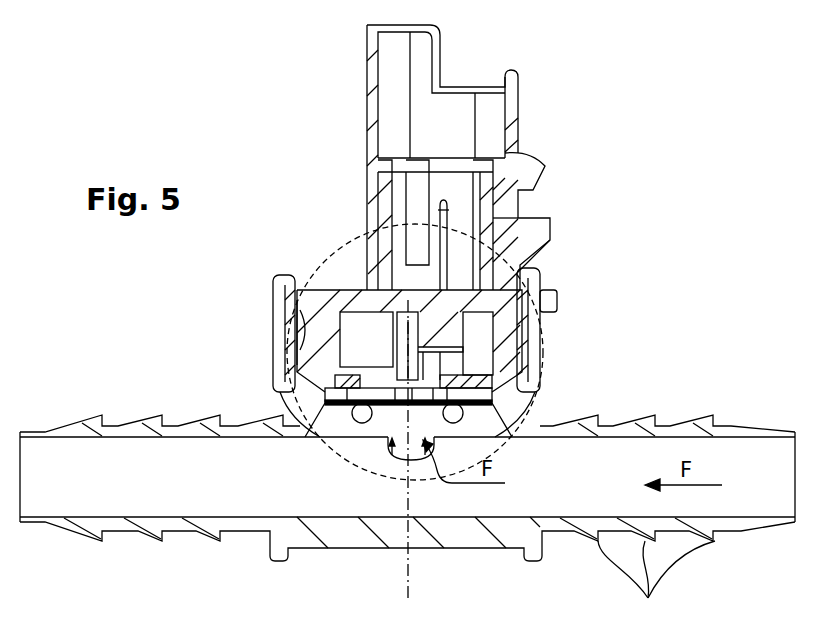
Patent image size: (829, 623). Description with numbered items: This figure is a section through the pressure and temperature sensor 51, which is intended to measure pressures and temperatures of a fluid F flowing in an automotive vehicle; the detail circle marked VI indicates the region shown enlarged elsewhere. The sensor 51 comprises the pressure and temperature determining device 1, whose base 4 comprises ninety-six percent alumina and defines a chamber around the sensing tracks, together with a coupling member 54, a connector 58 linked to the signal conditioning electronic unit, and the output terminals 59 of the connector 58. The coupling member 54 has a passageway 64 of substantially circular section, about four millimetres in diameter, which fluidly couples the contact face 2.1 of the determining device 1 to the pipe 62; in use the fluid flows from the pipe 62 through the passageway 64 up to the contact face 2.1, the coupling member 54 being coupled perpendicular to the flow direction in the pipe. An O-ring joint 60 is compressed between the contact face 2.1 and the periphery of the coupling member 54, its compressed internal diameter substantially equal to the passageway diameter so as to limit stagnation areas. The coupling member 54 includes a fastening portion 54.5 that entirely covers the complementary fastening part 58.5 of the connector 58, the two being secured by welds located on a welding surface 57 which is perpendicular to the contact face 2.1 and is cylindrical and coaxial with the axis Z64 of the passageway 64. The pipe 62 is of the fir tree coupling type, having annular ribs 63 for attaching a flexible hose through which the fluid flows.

The pressure and temperature determining device 1 is at (537, 373).
The contact face 2.1 is at (386, 408).
The base 4 is at (318, 402).
The pressure and temperature sensor 51 is at (578, 318).
The coupling member 54 is at (515, 412).
The fastening portion 54.5 is at (288, 330).
The welding surface 57 is at (297, 352).
The connector 58 is at (450, 118).
The fastening part 58.5 is at (322, 317).
The output terminals 59 is at (446, 204).
The O-ring joint 60 is at (362, 425).
The pipe 62 is at (717, 455).
The annular ribs 63 is at (656, 582).
The passageway 64 is at (392, 448).
The axis of the passageway Z64 is at (431, 451).
The section indicator VI is at (320, 262).